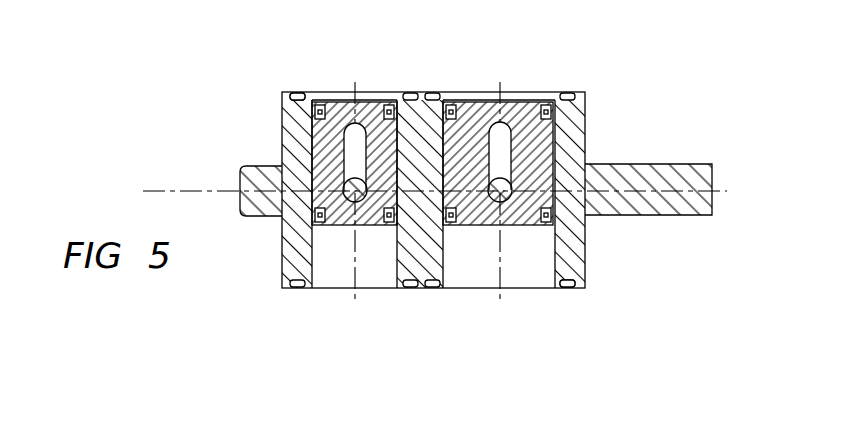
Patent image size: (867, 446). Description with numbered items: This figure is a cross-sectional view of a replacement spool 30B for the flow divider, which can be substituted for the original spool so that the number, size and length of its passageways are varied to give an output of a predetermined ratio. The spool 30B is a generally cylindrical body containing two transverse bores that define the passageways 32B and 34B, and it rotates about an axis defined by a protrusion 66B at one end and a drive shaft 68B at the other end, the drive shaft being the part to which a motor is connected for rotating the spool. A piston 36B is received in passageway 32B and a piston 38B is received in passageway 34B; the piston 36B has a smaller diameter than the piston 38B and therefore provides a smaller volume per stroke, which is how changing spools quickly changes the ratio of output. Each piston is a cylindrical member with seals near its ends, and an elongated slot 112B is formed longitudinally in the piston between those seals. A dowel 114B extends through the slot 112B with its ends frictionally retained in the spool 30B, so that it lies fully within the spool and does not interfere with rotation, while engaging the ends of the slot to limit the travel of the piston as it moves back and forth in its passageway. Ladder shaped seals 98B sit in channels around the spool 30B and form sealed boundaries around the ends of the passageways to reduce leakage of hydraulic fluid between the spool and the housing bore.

The replacement spool 30B is at (640, 143).
The passageway 32B is at (340, 272).
The passageway 34B is at (482, 270).
The piston 36B is at (337, 90).
The piston 38B is at (507, 158).
The protrusion 66B is at (259, 176).
The drive shaft 68B is at (652, 215).
The ladder shaped seal 98B is at (299, 93).
The elongated slot 112B is at (508, 137).
The dowel 114B is at (503, 198).